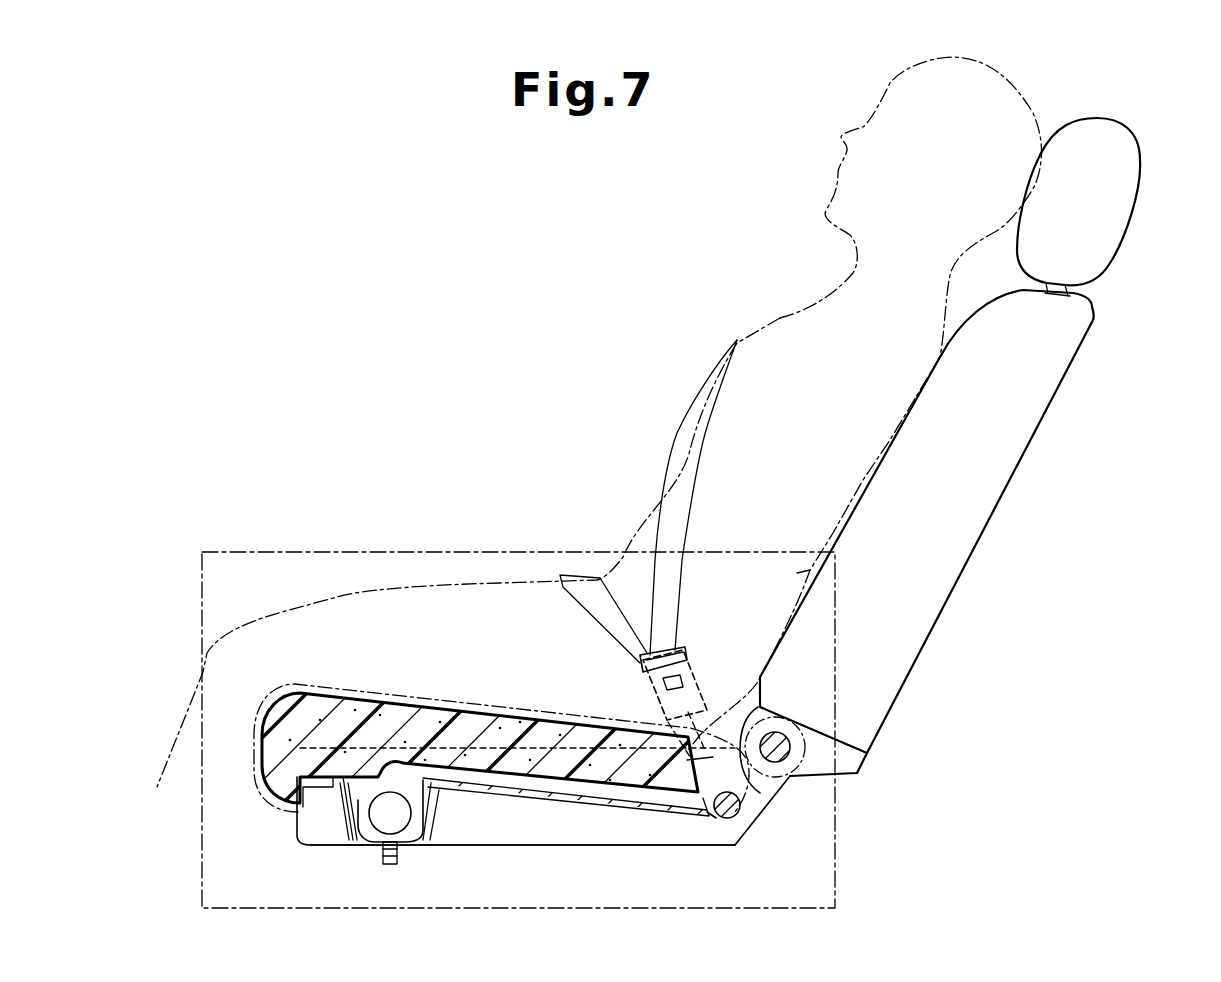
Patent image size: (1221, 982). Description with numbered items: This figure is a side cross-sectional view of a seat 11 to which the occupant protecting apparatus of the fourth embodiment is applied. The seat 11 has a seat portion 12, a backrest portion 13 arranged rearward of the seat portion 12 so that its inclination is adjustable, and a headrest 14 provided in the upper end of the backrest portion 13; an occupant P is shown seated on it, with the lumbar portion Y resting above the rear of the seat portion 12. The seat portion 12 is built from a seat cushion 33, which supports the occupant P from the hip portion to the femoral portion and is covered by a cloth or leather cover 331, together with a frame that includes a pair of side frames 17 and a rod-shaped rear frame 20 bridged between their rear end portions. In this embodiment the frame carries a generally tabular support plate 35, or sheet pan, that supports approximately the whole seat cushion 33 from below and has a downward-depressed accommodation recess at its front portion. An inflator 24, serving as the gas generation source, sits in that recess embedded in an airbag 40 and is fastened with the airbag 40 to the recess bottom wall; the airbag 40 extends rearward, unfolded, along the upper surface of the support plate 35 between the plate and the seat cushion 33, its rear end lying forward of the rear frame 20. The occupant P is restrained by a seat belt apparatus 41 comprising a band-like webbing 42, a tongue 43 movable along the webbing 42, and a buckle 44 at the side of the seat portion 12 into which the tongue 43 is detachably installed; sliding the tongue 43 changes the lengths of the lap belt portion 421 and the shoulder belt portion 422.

The seat 11 is at (983, 535).
The seat portion 12 is at (765, 790).
The backrest portion 13 is at (887, 707).
The headrest 14 is at (1118, 218).
The side frame 17 is at (730, 900).
The rear frame 20 is at (740, 833).
The inflator 24 is at (373, 818).
The seat cushion 33 is at (407, 708).
The cover 331 is at (347, 690).
The support plate 35 is at (523, 797).
The airbag 40 is at (430, 805).
The seat belt apparatus 41 is at (640, 356).
The webbing 42 is at (600, 437).
The lap belt portion 421 is at (572, 573).
The shoulder belt portion 422 is at (682, 478).
The tongue 43 is at (687, 650).
The buckle 44 is at (698, 690).
The occupant P is at (880, 102).
The lumbar portion Y is at (837, 573).